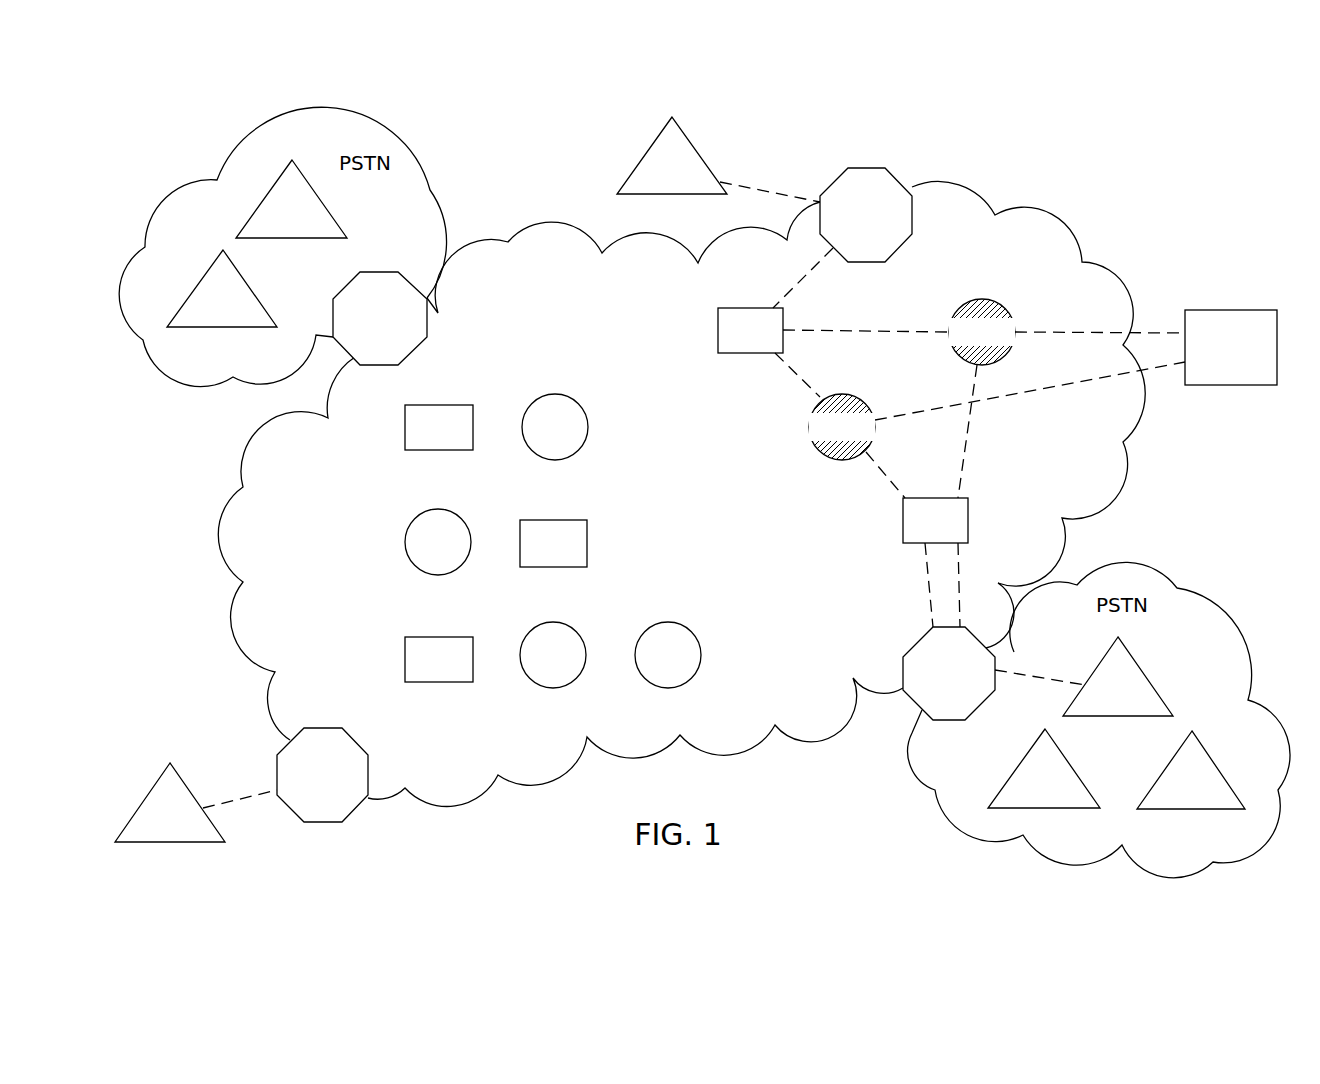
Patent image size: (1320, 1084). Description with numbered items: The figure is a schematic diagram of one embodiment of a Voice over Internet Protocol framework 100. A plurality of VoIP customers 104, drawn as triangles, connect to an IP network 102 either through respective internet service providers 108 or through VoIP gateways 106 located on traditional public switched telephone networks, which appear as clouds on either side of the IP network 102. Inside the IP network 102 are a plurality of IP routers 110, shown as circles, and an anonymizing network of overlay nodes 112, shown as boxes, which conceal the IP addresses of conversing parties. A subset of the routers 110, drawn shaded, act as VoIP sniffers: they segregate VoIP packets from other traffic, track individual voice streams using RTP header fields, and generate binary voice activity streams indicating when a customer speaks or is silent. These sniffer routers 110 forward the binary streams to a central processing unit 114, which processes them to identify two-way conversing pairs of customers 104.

The VoIP framework 100 is at (1030, 165).
The IP network 102 is at (748, 519).
The VoIP customers 104 is at (1217, 796).
The VoIP gateways 106 is at (975, 683).
The internet service providers 108 is at (299, 785).
The IP routers 110 is at (1008, 343).
The overlay nodes 112 is at (961, 530).
The central processing unit 114 is at (1252, 369).